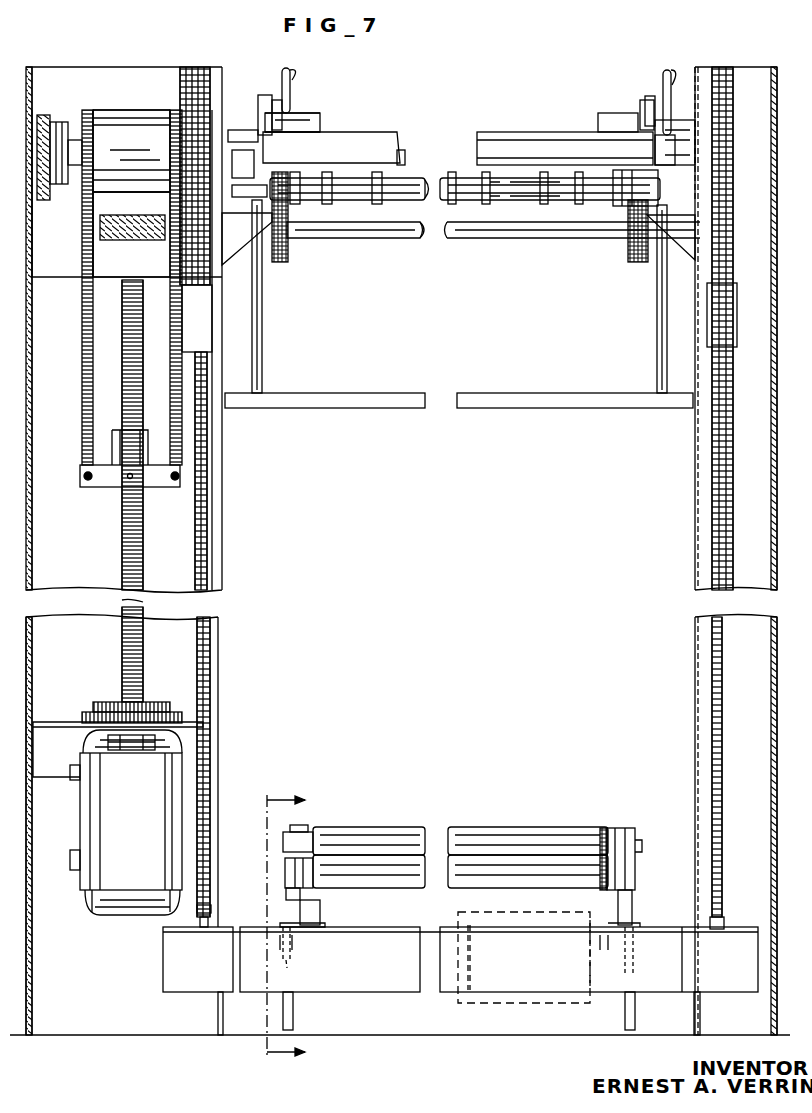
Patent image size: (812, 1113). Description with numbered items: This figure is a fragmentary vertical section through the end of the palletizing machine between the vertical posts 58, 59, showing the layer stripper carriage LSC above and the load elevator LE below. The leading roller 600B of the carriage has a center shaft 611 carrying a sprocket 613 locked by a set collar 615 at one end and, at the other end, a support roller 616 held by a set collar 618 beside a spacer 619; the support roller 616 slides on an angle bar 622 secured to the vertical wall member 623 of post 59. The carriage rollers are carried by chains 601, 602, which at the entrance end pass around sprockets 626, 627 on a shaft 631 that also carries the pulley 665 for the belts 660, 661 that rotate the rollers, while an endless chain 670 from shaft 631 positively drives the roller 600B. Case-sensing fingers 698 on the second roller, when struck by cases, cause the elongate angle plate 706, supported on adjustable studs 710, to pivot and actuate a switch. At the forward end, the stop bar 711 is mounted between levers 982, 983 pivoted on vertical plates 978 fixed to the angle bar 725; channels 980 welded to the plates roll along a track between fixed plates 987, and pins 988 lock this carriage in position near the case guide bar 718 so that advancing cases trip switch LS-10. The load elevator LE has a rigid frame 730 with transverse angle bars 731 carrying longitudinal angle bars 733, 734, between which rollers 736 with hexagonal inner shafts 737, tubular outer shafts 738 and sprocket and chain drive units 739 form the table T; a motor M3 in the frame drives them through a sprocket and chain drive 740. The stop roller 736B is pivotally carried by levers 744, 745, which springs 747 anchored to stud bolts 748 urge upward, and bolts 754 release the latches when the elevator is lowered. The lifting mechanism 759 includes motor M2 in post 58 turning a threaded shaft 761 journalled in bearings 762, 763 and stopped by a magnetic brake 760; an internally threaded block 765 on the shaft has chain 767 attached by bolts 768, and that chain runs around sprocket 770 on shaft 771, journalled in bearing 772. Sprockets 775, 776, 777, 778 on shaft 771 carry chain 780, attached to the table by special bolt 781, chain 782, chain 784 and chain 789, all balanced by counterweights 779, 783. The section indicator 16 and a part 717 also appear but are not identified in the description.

The vertical post 58 is at (122, 75).
The support post 59 is at (760, 67).
The chain 789 is at (195, 67).
The bearing 763 is at (62, 193).
The bearing 772 is at (42, 150).
The shaft 771 is at (75, 150).
The sprocket 776 is at (180, 108).
The sprocket 775 is at (170, 140).
The sprocket 770 is at (170, 156).
The elongate angle plate 706 is at (180, 198).
The studs 710 is at (185, 245).
The chain 767 is at (82, 400).
The bolts 768 is at (84, 474).
The internally threaded block 765 is at (125, 470).
The lifting mechanism 759 is at (172, 650).
The chain 780 is at (205, 575).
The vertical threaded shaft 761 is at (122, 610).
The bearing 762 is at (105, 702).
The magnetic brake 760 is at (185, 708).
The motor M2 is at (126, 822).
The special bolt 781 is at (200, 946).
The transverse angle bars 731 is at (180, 965).
The rigid frame 730 is at (180, 990).
The bolts 754 is at (293, 1018).
The motor M3 is at (452, 990).
The section line 16 is at (271, 925).
The load elevator LE is at (385, 830).
The leading roller 736B is at (410, 832).
The table T is at (548, 830).
The rollers 736 is at (480, 870).
The tubular outer shafts 738 is at (378, 875).
The sprocket and chain drive 740 is at (590, 906).
The lever 744 is at (290, 856).
The sprocket and chain drive units 739 is at (285, 875).
The hexagonal inner shafts 737 is at (286, 893).
The lever 745 is at (626, 830).
The longitudinal angle bar 733 is at (305, 926).
The longitudinal angle bar 734 is at (632, 925).
The fixed stud bolts 748 is at (292, 950).
The springs 747 is at (283, 948).
The switch LS-10 is at (275, 100).
The pin 988 is at (288, 80).
The vertical plates 978 is at (278, 96).
The case guide bar 718 is at (300, 113).
The lever 982 is at (320, 122).
The angle bar 725 is at (382, 140).
The layer stripper carriage LSC is at (470, 140).
The stop bar 711 is at (405, 160).
The leading roller 600B is at (485, 170).
The channel 980 is at (258, 150).
The sprocket 613 is at (265, 180).
The set collar 615 is at (300, 175).
The case-sensing fingers 698 is at (378, 178).
The center shaft 611 is at (432, 192).
The set collar 618 is at (598, 178).
The spacer 619 is at (565, 196).
The support roller 616 is at (625, 205).
The right switch box 717 is at (600, 116).
The lever 983 is at (640, 120).
The fixed spaced plates 987 is at (690, 75).
The vertical wall member 623 is at (700, 75).
The sprocket 777 is at (733, 140).
The sprocket 778 is at (733, 160).
The chain 784 is at (733, 200).
The chain 782 is at (712, 617).
The counterweight 783 is at (722, 332).
The counterweight 779 is at (200, 338).
The belt 661 is at (288, 210).
The pulley 665 is at (288, 250).
The endless chain 670 is at (268, 265).
The sprocket 627 is at (270, 290).
The chain 602 is at (265, 360).
The shaft 631 is at (462, 232).
The belt 660 is at (628, 262).
The angle bar 622 is at (672, 240).
The sprocket 626 is at (662, 280).
The chain 601 is at (657, 320).